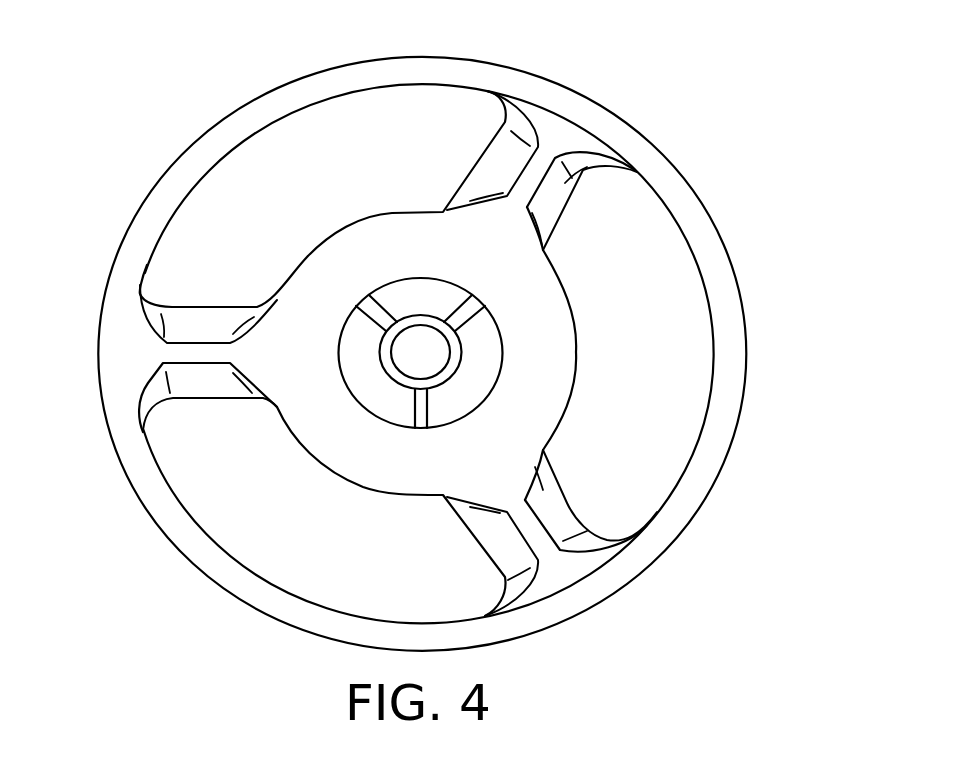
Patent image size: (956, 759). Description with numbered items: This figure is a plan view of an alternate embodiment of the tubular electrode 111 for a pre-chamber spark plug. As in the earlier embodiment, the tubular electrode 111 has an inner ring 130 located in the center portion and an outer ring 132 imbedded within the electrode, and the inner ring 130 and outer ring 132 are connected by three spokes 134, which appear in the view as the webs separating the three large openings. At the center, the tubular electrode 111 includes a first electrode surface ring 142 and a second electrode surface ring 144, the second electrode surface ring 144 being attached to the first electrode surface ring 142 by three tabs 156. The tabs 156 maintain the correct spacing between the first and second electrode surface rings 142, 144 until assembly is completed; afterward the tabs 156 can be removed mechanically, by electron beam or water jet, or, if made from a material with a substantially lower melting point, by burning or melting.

The tubular electrode 111 is at (740, 94).
The inner ring 130 is at (521, 441).
The outer ring 132 is at (733, 329).
The spokes 134 is at (578, 177).
The first electrode surface ring 142 is at (465, 398).
The second electrode surface ring 144 is at (462, 368).
The tabs 156 is at (381, 308).